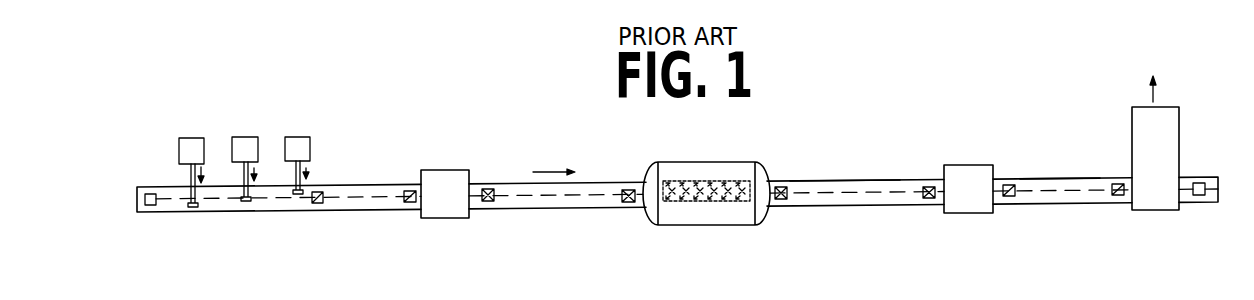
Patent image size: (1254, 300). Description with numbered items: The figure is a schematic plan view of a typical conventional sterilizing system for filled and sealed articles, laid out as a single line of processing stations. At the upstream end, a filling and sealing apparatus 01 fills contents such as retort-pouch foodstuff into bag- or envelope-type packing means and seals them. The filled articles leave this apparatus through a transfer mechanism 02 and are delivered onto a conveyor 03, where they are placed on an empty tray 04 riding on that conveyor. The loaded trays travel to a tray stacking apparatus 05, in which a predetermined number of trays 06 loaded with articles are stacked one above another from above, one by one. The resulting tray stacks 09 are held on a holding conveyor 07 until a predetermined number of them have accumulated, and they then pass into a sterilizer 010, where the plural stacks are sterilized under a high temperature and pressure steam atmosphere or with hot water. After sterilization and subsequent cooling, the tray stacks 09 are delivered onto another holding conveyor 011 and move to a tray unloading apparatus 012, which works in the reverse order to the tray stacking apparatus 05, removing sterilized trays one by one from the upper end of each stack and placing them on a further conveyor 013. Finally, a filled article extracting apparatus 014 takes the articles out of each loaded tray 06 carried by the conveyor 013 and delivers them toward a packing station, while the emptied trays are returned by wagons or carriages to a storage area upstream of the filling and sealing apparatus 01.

The filling and sealing apparatus 01 is at (298, 137).
The transfer mechanism 02 is at (293, 173).
The conveyor 03 is at (347, 185).
The empty tray 04 is at (1197, 196).
The tray stacking apparatus 05 is at (447, 170).
The loaded tray 06 is at (1006, 185).
The holding conveyor 07 is at (522, 184).
The tray stack 09 is at (925, 187).
The sterilizer 010 is at (702, 163).
The holding conveyor 011 is at (808, 181).
The tray unloading apparatus 012 is at (963, 165).
The conveyor 013 is at (1063, 178).
The filled article extracting apparatus 014 is at (1132, 127).